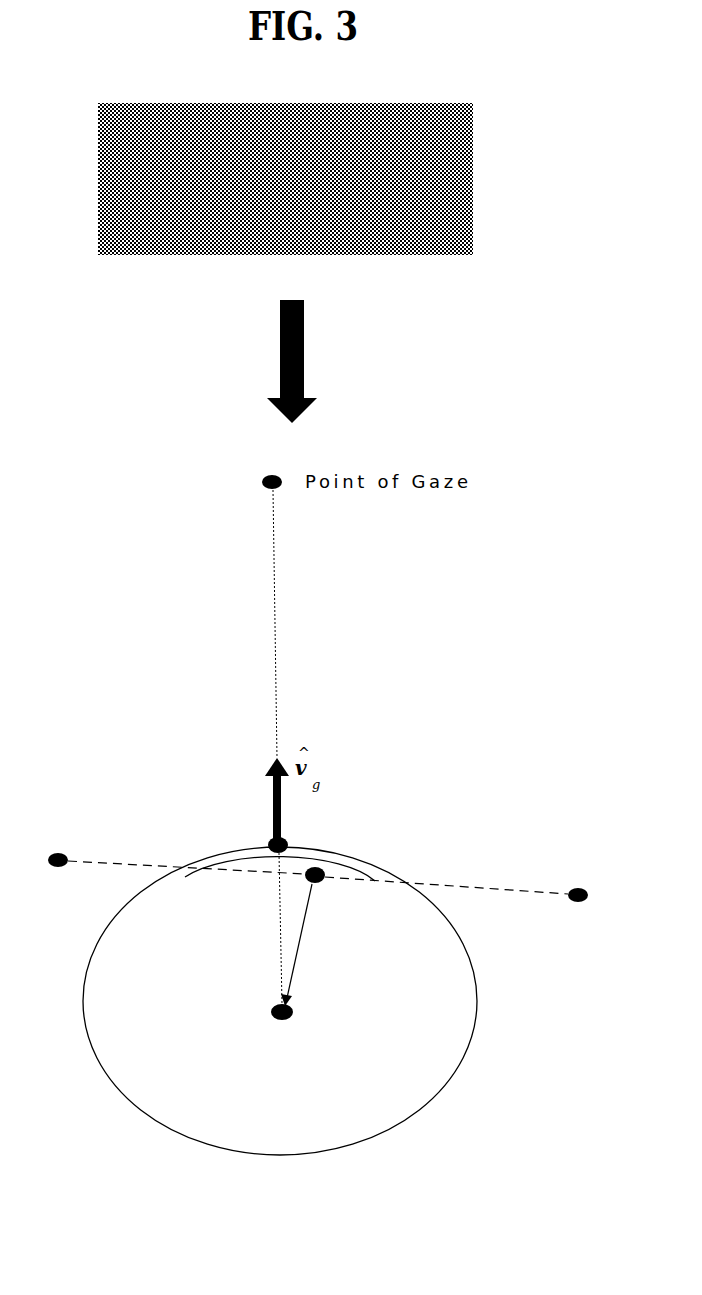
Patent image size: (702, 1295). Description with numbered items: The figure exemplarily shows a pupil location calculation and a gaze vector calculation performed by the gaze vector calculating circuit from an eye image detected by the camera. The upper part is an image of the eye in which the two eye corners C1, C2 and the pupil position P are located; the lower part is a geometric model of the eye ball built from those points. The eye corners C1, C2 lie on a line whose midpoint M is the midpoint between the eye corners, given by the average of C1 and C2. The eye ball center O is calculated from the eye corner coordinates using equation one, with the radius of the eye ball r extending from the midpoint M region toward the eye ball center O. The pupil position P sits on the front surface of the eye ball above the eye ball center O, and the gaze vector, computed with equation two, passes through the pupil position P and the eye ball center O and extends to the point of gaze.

The eye corner C1 is at (161, 876).
The eye corner C2 is at (458, 906).
The pupil position P is at (288, 835).
The midpoint between the eye corners M is at (331, 893).
The eye ball center O is at (277, 1031).
The radius of the eye ball r is at (300, 945).